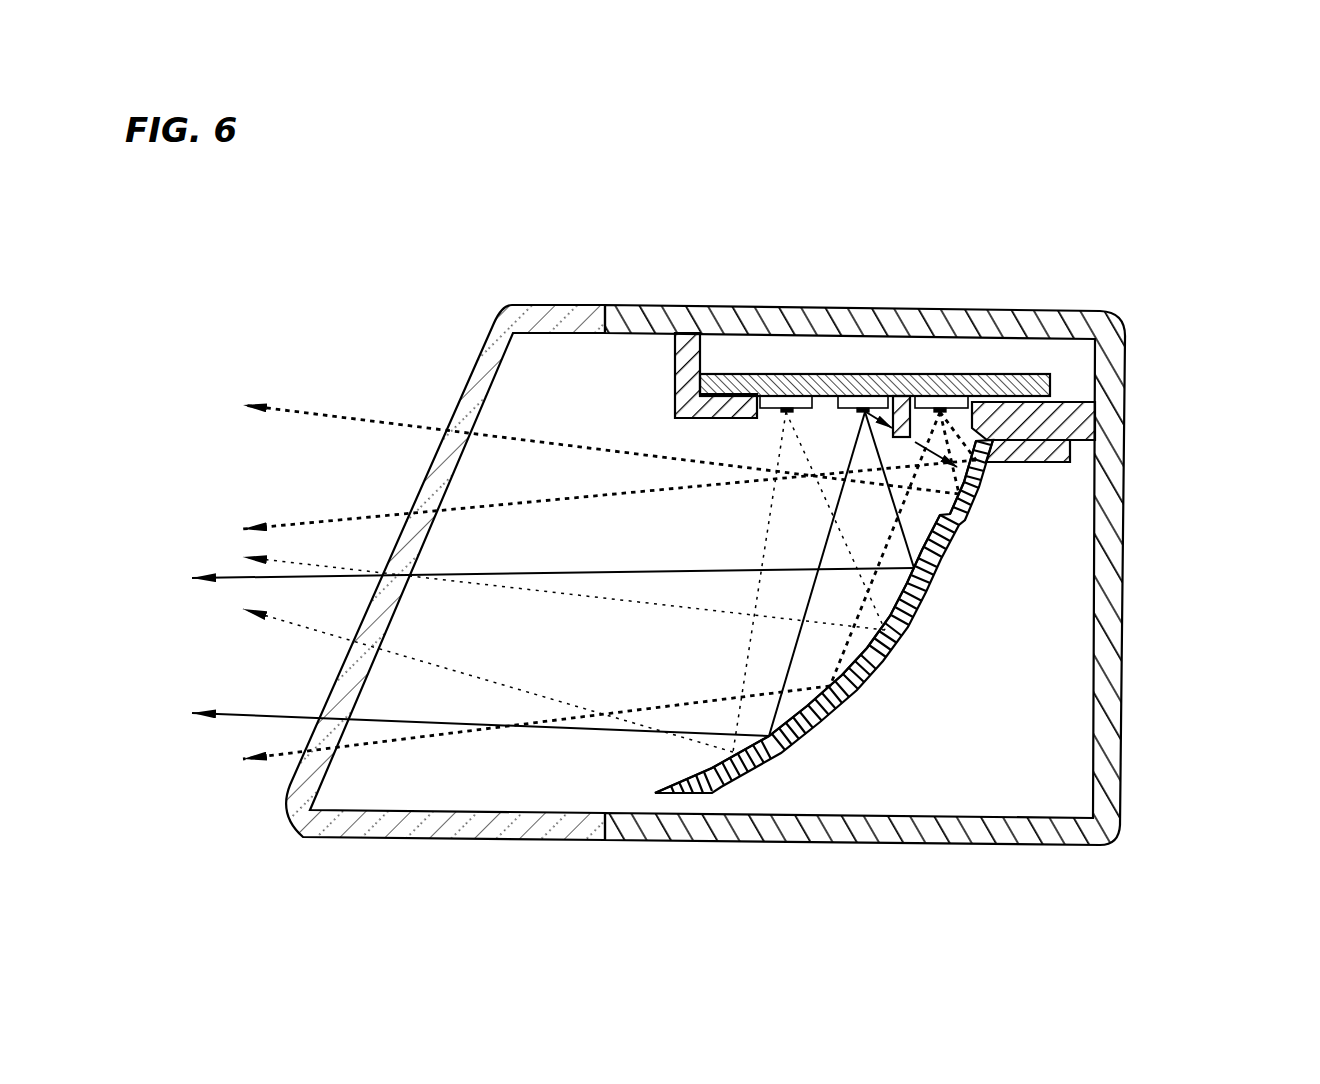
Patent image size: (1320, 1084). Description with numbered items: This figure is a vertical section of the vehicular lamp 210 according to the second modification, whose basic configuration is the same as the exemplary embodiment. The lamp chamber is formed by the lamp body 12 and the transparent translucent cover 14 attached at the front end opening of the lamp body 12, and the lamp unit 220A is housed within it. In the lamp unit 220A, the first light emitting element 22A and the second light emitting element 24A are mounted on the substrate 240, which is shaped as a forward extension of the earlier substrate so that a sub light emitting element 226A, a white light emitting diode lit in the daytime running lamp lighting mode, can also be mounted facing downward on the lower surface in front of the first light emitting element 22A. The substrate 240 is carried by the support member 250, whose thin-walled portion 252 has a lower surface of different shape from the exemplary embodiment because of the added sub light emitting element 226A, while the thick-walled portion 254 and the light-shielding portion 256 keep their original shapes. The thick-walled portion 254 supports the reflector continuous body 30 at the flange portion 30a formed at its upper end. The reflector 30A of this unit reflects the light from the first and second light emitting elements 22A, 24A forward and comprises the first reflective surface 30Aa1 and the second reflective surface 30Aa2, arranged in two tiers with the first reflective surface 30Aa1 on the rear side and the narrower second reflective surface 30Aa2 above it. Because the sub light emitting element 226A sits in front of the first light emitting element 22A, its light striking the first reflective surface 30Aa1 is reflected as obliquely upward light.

The vehicular lamp 210 is at (368, 248).
The lamp body 12 is at (1130, 355).
The translucent cover 14 is at (460, 388).
The support member 250 is at (672, 398).
The thin-walled portion 252 is at (724, 418).
The substrate 240 is at (1035, 374).
The thick-walled portion 254 is at (1095, 423).
The light-shielding portion 256 is at (903, 440).
The sub light emitting element 226A is at (790, 392).
The first light emitting element 22A is at (868, 392).
The second light emitting element 24A is at (942, 392).
The lamp unit 220A is at (640, 533).
The reflector continuous body 30 is at (885, 677).
The flange portion 30a is at (1025, 467).
The reflector 30A is at (915, 620).
The first reflective surface 30Aa1 is at (840, 672).
The second reflective surface 30Aa2 is at (968, 495).